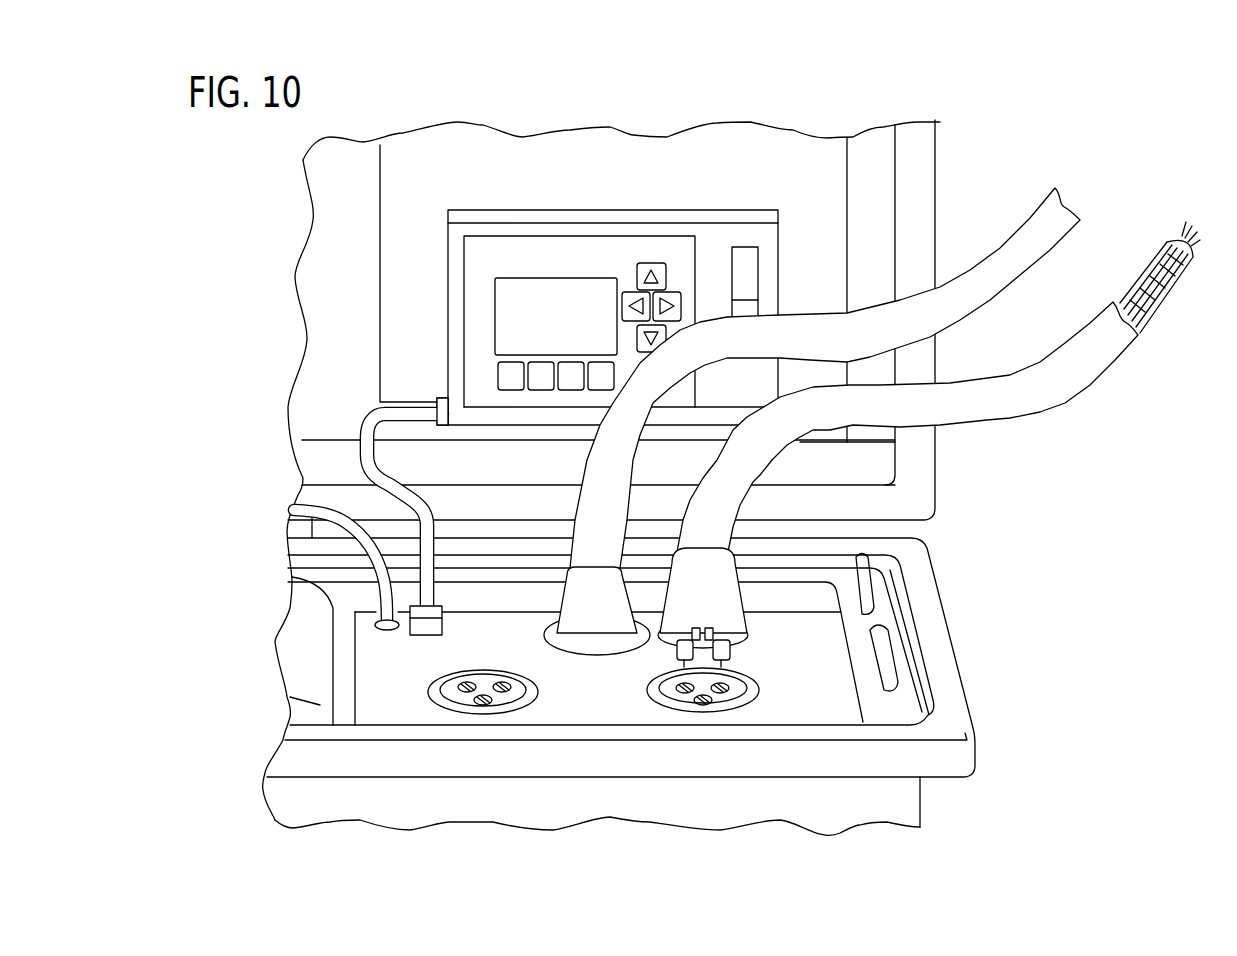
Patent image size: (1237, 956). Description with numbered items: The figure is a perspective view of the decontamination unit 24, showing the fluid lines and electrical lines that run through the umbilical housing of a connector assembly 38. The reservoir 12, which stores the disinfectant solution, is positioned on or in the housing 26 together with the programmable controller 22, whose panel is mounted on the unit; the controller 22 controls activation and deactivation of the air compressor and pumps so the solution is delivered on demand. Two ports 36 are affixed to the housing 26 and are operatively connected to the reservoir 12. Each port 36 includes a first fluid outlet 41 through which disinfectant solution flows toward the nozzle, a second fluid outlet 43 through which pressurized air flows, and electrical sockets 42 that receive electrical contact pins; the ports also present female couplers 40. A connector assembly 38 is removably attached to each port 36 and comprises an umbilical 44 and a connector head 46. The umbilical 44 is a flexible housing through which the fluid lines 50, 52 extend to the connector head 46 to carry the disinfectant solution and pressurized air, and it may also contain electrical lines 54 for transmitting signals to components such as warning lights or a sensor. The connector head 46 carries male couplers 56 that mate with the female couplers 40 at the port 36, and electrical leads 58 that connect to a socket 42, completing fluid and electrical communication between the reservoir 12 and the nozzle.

The reservoir 12 is at (302, 655).
The programmable controller 22 is at (588, 243).
The decontamination unit 24 is at (958, 807).
The housing 26 is at (840, 815).
The port 36 is at (540, 695).
The connector assembly 38 is at (879, 378).
The female couplers 40 is at (493, 676).
The first fluid outlet 41 is at (680, 692).
The electrical sockets 42 is at (483, 707).
The second fluid outlet 43 is at (722, 694).
The umbilical 44 is at (996, 281).
The connector head 46 is at (578, 630).
The fluid line 50 is at (1165, 259).
The fluid line 52 is at (1142, 287).
The electrical lines 54 is at (1182, 230).
The male couplers 56 is at (724, 649).
The electrical leads 58 is at (708, 634).